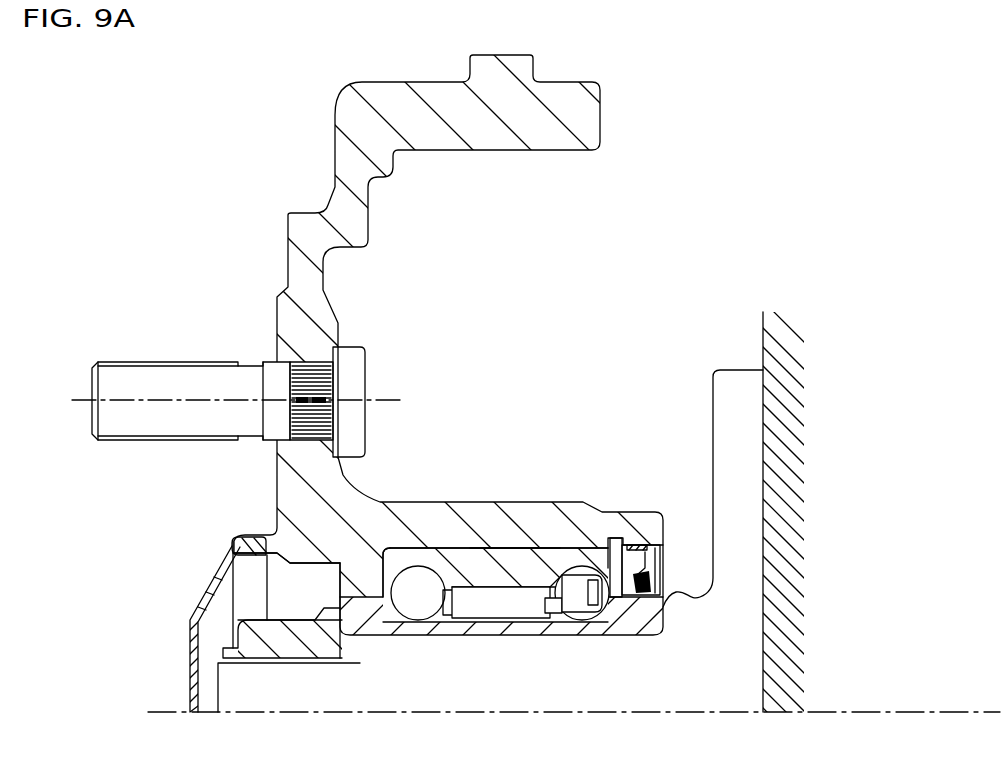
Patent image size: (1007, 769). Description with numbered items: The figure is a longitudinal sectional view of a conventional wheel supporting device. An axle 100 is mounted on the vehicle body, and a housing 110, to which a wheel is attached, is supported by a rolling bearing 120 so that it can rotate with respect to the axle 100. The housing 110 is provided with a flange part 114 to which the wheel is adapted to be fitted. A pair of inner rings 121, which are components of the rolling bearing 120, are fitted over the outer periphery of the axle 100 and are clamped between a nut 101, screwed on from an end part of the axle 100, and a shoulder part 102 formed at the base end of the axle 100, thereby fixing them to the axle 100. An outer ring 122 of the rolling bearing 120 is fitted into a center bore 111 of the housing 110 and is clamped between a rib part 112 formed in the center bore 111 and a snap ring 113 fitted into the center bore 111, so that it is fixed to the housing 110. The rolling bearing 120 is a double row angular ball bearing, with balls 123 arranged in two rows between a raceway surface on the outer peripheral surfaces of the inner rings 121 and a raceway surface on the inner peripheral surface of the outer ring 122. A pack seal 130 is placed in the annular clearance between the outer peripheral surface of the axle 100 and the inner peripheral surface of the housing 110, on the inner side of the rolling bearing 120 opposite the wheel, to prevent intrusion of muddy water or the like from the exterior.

The axle 100 is at (731, 688).
The nut 101 is at (216, 613).
The shoulder part 102 is at (700, 598).
The housing 110 is at (468, 507).
The center bore 111 is at (441, 557).
The rib part 112 is at (362, 580).
The snap ring 113 is at (623, 537).
The flange part 114 is at (291, 224).
The rolling bearing 120 is at (503, 538).
The inner rings 121 is at (361, 626).
The outer ring 122 is at (550, 551).
The balls 123 is at (412, 577).
The pack seal 130 is at (674, 567).